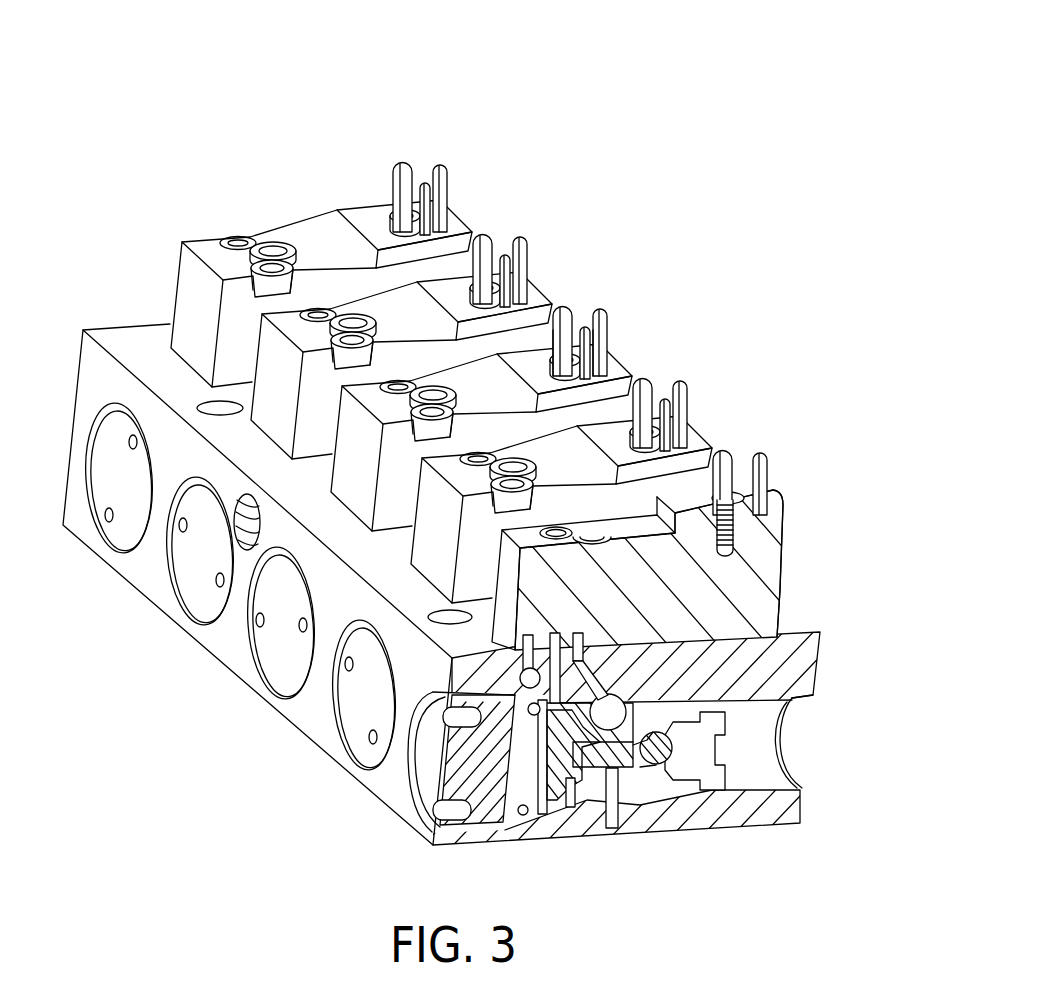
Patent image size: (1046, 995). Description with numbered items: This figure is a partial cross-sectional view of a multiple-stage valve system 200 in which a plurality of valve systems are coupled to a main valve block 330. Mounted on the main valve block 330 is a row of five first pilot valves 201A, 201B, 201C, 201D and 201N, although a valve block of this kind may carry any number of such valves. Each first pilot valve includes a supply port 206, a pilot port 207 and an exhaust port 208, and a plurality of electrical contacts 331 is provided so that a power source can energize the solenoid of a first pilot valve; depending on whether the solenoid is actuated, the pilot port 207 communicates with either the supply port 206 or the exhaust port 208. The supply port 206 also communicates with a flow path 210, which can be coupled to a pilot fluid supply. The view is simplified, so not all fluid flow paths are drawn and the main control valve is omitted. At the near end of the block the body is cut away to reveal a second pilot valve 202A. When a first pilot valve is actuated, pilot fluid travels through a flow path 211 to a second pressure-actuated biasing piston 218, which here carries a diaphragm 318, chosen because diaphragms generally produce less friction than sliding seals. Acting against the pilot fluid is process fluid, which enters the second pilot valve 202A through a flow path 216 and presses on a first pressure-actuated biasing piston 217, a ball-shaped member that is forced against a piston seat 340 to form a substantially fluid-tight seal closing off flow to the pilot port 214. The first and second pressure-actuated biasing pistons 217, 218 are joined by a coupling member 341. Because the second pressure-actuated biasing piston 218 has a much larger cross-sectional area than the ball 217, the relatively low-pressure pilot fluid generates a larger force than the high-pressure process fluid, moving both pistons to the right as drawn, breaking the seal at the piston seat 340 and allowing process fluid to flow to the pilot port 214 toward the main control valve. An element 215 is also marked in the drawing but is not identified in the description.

The multiple-stage valve system 200 is at (594, 140).
The first pilot valve 201N is at (456, 222).
The first pilot valve 201D is at (537, 297).
The first pilot valve 201C is at (620, 368).
The first pilot valve 201B is at (704, 441).
The first pilot valve 201A is at (775, 505).
The second pilot valve 202A is at (721, 850).
The supply port 206 is at (527, 637).
The pilot port 207 is at (555, 633).
The exhaust port 208 is at (580, 634).
The flow path 210 is at (521, 677).
The flow path 211 is at (540, 692).
The pilot port 214 is at (613, 830).
The ball 215 is at (622, 702).
The flow path 216 is at (765, 747).
The first pressure-actuated biasing piston 217 is at (658, 765).
The second pressure-actuated biasing piston 218 is at (553, 805).
The diaphragm 318 is at (570, 795).
The main valve block 330 is at (157, 590).
The electrical contacts 331 is at (681, 412).
The piston seat 340 is at (667, 733).
The coupling member 341 is at (642, 767).